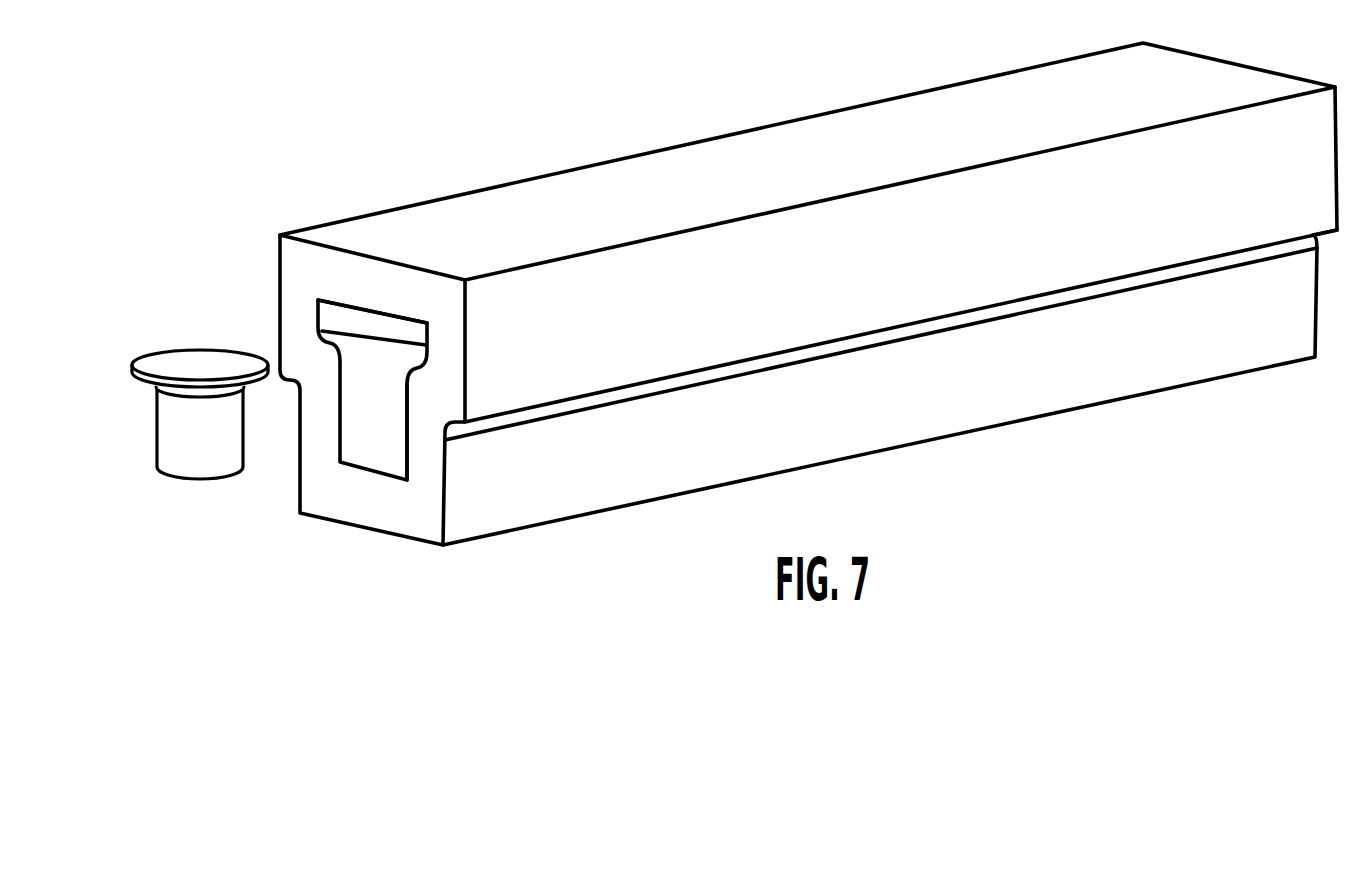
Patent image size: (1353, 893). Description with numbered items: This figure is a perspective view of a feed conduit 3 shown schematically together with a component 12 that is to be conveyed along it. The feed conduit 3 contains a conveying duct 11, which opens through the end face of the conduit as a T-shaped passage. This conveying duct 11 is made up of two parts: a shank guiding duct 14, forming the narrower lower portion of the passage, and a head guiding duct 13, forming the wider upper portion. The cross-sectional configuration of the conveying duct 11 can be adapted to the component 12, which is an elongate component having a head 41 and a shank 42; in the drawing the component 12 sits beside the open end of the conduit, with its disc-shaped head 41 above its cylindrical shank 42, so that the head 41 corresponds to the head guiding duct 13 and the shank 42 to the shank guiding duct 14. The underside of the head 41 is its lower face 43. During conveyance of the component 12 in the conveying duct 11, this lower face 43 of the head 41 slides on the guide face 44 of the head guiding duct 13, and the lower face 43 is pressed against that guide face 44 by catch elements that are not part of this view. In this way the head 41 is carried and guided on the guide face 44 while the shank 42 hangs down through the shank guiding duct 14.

The feed conduit 3 is at (822, 127).
The conveying duct 11 is at (360, 418).
The head guiding duct 13 is at (337, 308).
The shank guiding duct 14 is at (392, 413).
The guide face 44 is at (330, 334).
The component 12 is at (163, 423).
The head 41 is at (148, 363).
The shank 42 is at (177, 465).
The lower face 43 is at (155, 387).